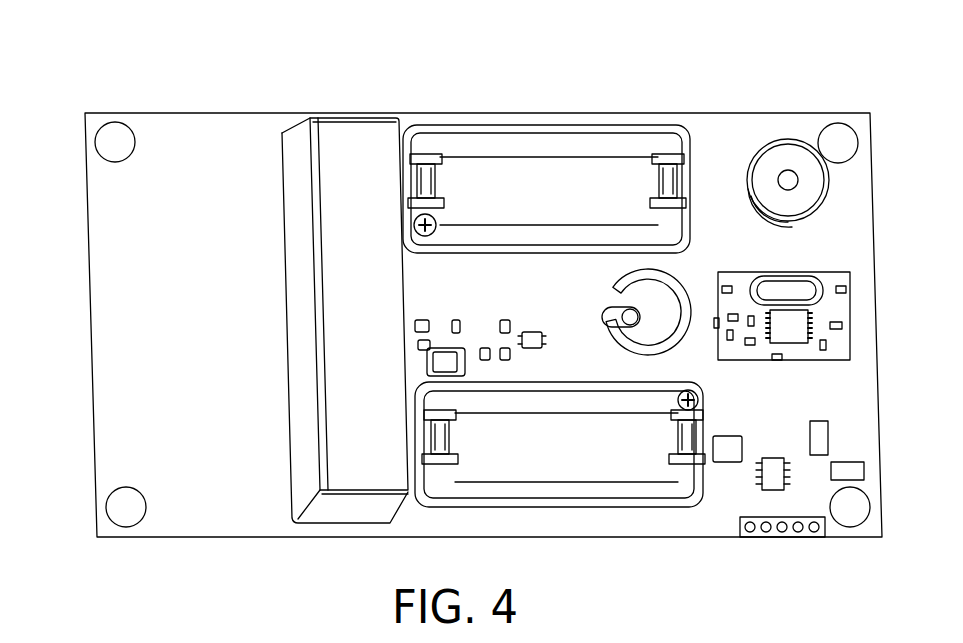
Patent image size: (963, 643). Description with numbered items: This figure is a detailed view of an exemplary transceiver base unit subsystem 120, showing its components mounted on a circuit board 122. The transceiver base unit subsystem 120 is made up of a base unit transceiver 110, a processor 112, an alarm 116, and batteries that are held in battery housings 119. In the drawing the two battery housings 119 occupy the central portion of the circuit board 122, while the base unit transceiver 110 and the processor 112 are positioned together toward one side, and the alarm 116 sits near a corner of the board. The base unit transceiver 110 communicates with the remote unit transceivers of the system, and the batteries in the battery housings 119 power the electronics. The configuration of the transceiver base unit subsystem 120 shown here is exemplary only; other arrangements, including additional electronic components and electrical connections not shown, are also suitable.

The base unit transceiver 110 is at (808, 285).
The processor 112 is at (815, 318).
The alarm 116 is at (788, 138).
The battery housing 119 is at (497, 123).
The transceiver base unit subsystem 120 is at (394, 90).
The circuit board 122 is at (80, 370).